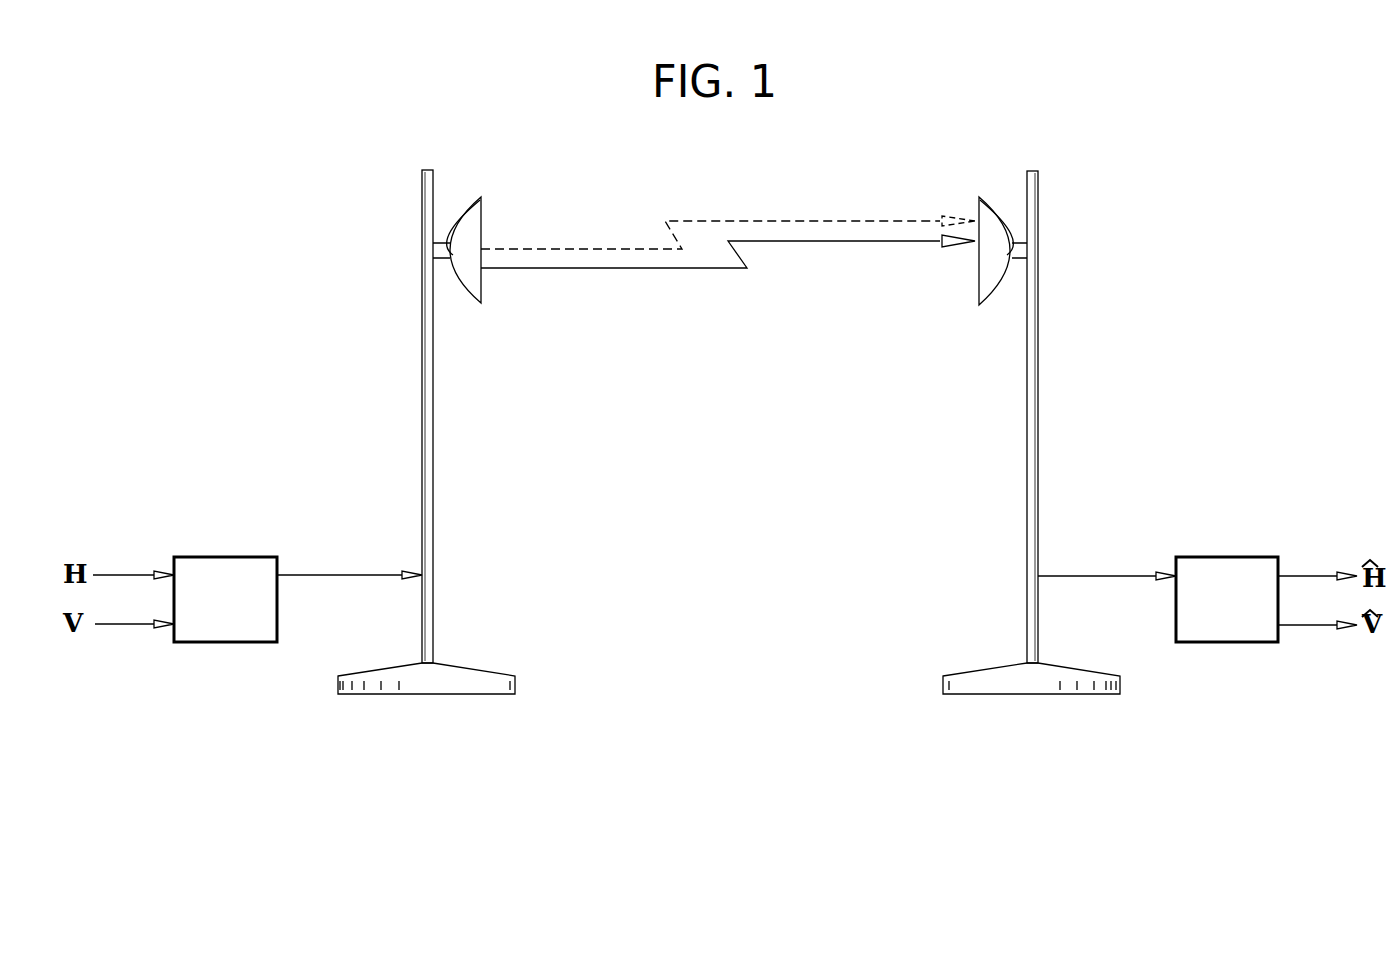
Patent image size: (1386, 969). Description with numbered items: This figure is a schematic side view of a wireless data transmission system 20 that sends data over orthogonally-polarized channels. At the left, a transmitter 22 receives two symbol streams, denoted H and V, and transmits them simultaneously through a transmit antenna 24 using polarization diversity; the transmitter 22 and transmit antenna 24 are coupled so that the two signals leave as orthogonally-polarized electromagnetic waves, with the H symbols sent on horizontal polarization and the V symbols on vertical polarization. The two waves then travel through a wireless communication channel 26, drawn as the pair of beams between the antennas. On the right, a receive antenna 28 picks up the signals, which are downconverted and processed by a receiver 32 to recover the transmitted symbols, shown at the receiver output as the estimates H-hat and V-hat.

The wireless data transmission system 20 is at (314, 131).
The transmitter 22 is at (233, 557).
The transmit antenna 24 is at (473, 208).
The wireless communication channel 26 is at (710, 243).
The receive antenna 28 is at (988, 208).
The receiver 32 is at (1245, 557).